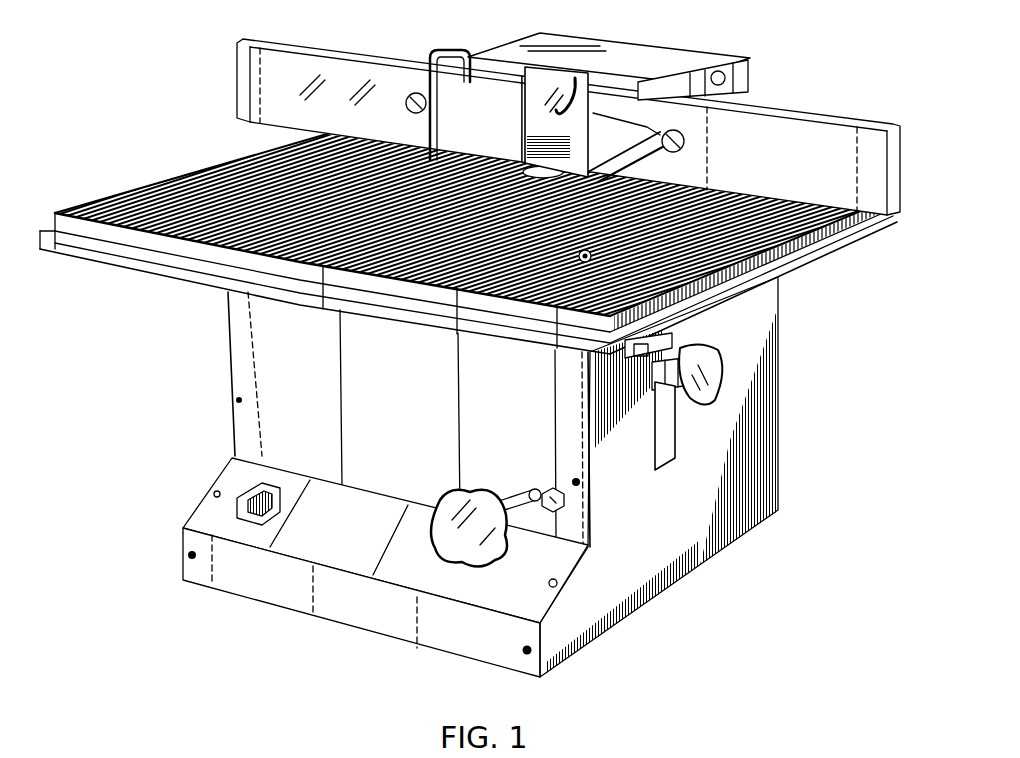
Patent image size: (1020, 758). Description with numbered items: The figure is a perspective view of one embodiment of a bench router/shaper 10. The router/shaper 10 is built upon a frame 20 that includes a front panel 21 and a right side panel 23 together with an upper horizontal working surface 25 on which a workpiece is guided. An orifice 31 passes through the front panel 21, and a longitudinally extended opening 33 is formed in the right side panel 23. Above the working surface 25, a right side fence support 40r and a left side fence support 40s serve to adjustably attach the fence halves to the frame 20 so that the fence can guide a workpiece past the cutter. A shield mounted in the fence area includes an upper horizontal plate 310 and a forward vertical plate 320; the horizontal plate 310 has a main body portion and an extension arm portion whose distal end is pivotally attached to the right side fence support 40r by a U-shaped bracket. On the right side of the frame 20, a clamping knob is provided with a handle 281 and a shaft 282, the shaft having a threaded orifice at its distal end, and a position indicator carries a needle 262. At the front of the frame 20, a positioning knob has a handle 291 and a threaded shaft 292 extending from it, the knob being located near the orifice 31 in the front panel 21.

The router/shaper 10 is at (160, 104).
The frame 20 is at (277, 430).
The front panel 21 is at (242, 331).
The right side panel 23 is at (642, 544).
The upper horizontal working surface 25 is at (143, 177).
The orifice through front panel 31 is at (524, 512).
The longitudinally extended opening in right panel 33 is at (672, 437).
The left side fence support 40s is at (289, 92).
The right side fence support 40r is at (800, 153).
The needle 262 is at (663, 340).
The handle 281 is at (713, 363).
The shaft 282 is at (657, 382).
The handle 291 is at (458, 535).
The threaded shaft 292 is at (497, 505).
The upper horizontal plate 310 is at (625, 46).
The forward vertical plate 320 is at (447, 50).